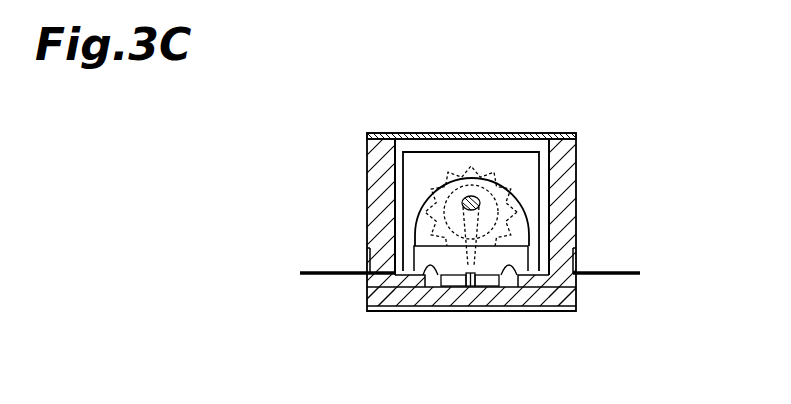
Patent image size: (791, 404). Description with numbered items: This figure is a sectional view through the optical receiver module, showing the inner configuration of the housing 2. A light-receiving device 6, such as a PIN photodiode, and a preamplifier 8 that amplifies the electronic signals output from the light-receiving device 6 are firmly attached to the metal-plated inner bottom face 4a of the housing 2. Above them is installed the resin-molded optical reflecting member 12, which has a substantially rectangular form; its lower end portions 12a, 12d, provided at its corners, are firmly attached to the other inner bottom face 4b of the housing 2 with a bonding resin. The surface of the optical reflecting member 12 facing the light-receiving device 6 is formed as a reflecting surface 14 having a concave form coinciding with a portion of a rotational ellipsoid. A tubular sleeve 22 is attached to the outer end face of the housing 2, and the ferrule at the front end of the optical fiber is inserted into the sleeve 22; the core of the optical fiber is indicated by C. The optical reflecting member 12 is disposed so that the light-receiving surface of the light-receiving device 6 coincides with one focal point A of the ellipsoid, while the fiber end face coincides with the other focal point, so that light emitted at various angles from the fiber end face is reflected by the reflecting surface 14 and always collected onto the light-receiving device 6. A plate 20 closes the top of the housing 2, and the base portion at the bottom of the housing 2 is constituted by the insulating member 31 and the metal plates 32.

The housing 2 is at (577, 178).
The cover plate 20 is at (395, 133).
The optical reflecting member 12 is at (437, 162).
The tubular sleeve 22 is at (490, 165).
The core of the optical fiber C is at (481, 199).
The reflecting surface 14 is at (417, 219).
The lower end portion 12a is at (403, 290).
The lower end portion 12d is at (553, 257).
The other inner bottom face 4b is at (435, 289).
The light-receiving device 6 is at (468, 290).
The preamplifier 8 is at (492, 288).
The inner bottom face 4a is at (508, 290).
The metal plates 32 is at (539, 311).
The insulating member 31 is at (563, 302).
The focal point A is at (477, 270).